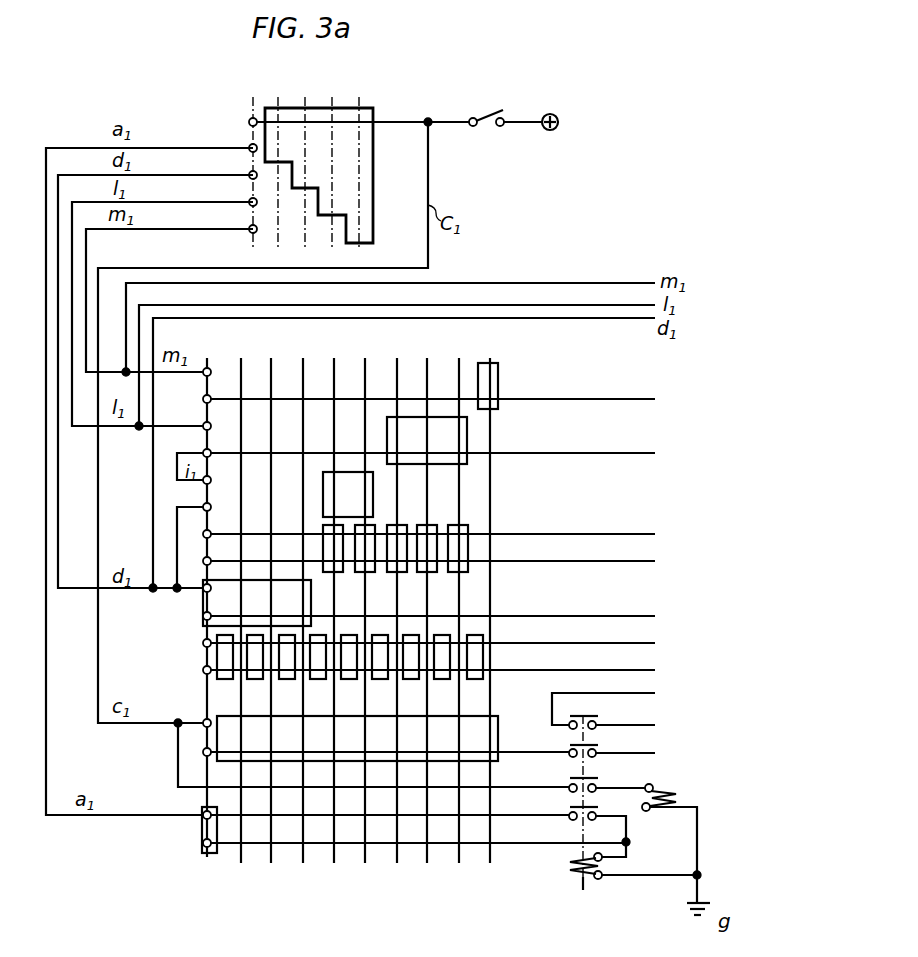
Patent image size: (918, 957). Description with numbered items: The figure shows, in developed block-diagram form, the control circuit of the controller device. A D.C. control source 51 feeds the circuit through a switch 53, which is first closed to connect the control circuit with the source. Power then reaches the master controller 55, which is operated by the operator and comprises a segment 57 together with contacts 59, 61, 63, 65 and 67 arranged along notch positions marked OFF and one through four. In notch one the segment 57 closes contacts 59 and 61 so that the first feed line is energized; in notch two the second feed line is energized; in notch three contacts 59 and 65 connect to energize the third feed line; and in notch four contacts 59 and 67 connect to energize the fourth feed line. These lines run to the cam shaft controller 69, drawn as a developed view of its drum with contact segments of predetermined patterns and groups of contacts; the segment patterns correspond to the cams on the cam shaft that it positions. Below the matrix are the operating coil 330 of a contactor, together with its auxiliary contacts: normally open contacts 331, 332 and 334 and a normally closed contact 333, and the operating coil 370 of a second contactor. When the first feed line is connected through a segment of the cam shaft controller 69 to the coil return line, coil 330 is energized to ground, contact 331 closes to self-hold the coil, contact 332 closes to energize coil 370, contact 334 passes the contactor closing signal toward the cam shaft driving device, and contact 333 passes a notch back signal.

The D.C. control source 51 is at (553, 114).
The switch 53 is at (487, 110).
The master controller 55 is at (324, 68).
The segment 57 is at (373, 165).
The contact 59 is at (247, 121).
The contact 61 is at (248, 147).
The contact 63 is at (248, 174).
The contact 65 is at (248, 201).
The contact 67 is at (248, 228).
The cam shaft controller 69 is at (342, 909).
The operating coil 330 is at (590, 882).
The normally open contact 331 is at (598, 808).
The normally open contact 332 is at (596, 777).
The normally closed contact 333 is at (598, 745).
The normally open contact 334 is at (598, 715).
The operating coil 370 is at (658, 791).